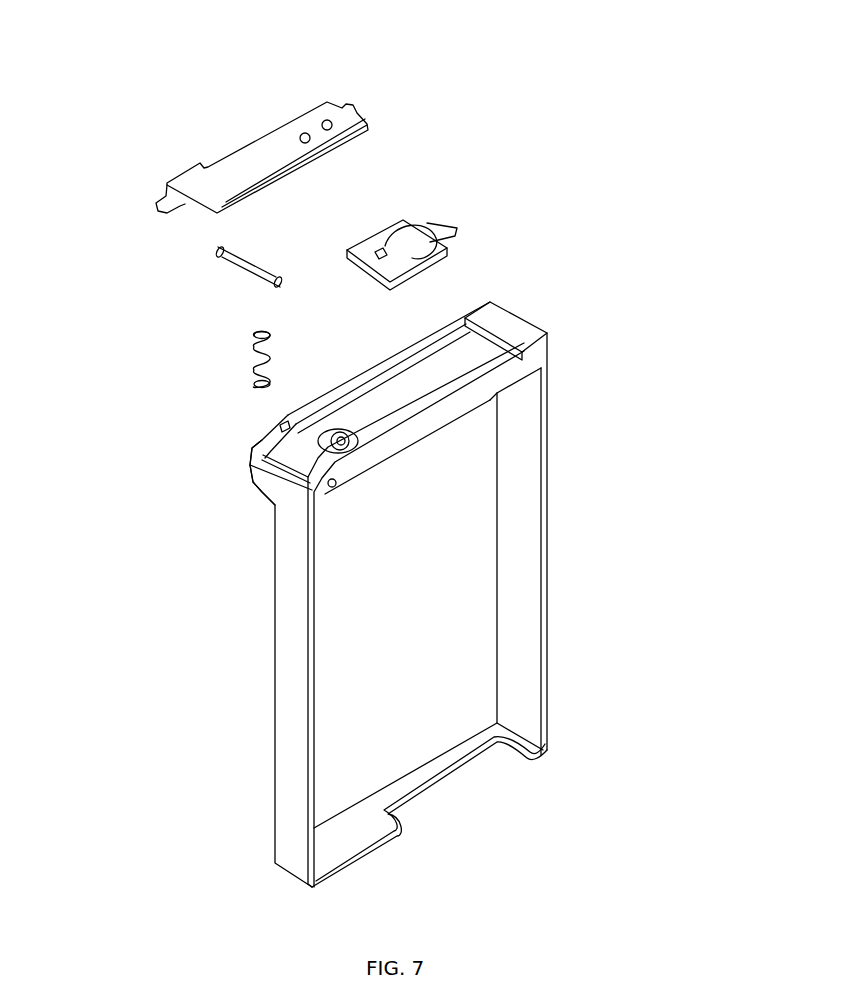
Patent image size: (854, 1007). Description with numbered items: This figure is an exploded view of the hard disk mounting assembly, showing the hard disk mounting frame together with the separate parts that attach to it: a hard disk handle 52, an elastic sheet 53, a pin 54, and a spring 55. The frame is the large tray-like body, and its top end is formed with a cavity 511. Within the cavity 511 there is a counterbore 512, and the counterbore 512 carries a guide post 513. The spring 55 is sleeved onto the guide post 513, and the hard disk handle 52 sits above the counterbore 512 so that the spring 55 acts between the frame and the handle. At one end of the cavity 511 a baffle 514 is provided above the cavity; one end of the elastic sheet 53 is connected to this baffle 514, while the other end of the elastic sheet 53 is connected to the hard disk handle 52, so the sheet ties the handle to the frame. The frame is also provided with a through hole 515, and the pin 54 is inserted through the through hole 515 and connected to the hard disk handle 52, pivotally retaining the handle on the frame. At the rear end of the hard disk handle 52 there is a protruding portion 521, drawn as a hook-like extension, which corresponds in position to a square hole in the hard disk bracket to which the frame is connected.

The cavity 511 is at (423, 375).
The counterbore 512 is at (288, 470).
The guide post 513 is at (325, 458).
The baffle 514 is at (516, 330).
The through hole 515 is at (331, 487).
The hard disk handle 52 is at (263, 155).
The protruding portion 521 is at (155, 197).
The elastic sheet 53 is at (440, 223).
The pin 54 is at (237, 265).
The spring 55 is at (252, 370).